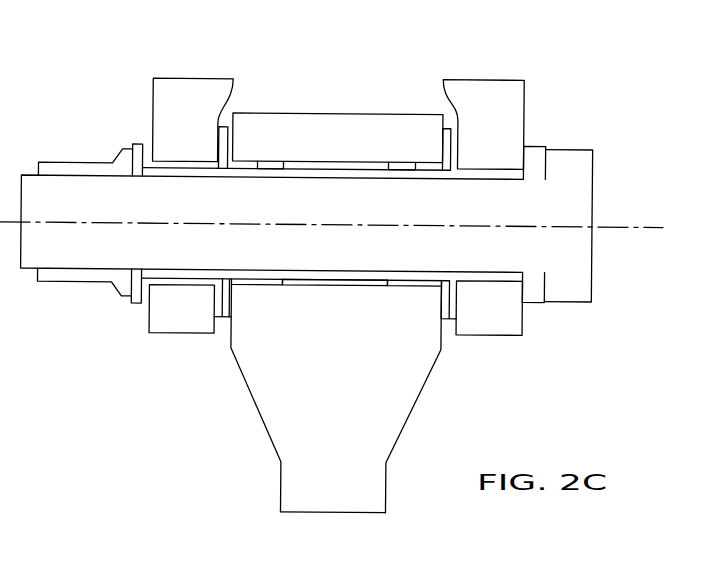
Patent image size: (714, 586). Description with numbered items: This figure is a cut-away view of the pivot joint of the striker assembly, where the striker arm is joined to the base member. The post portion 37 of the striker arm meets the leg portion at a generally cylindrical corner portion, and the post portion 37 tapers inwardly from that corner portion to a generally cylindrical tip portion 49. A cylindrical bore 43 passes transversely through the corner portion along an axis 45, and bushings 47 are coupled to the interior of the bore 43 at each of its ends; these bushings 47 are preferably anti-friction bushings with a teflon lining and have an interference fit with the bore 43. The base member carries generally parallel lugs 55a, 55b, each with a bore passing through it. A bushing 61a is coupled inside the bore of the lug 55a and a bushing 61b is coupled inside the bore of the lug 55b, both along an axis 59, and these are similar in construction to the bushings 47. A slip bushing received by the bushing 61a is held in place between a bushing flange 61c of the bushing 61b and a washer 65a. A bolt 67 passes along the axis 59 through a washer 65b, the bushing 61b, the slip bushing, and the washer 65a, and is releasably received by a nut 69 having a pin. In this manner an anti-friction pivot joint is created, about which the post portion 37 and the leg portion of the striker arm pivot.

The post portion 37 is at (270, 435).
The cylindrical bore 43 is at (320, 285).
The axis 45 is at (345, 223).
The axis 59 is at (645, 224).
The bushings 47 is at (258, 162).
The tip portion 49 is at (317, 512).
The lug 55a is at (181, 78).
The lug 55b is at (497, 78).
The bushing 61a is at (222, 127).
The bushing 61b is at (500, 168).
The bushing flange 61c is at (452, 127).
The washer 65a is at (135, 143).
The washer 65b is at (533, 146).
The bolt 67 is at (575, 148).
The nut 69 is at (65, 160).